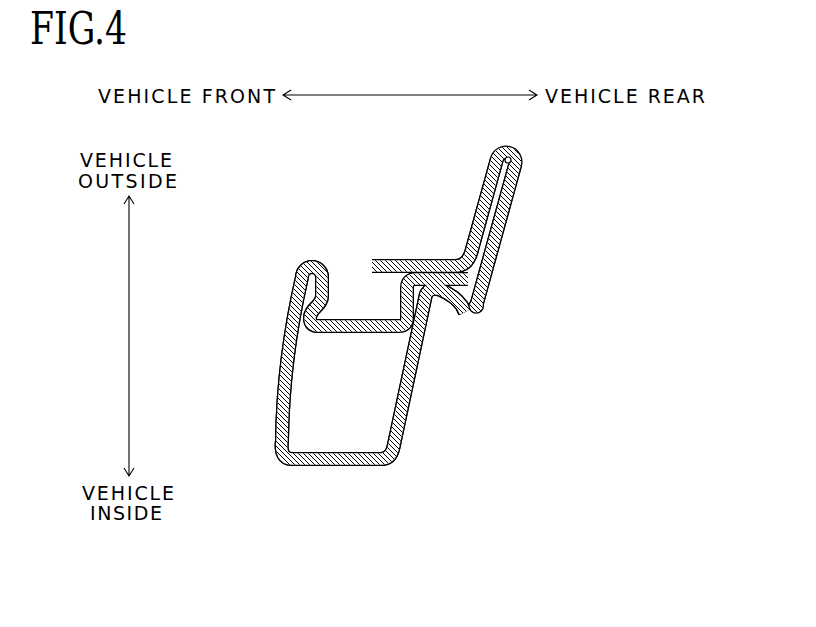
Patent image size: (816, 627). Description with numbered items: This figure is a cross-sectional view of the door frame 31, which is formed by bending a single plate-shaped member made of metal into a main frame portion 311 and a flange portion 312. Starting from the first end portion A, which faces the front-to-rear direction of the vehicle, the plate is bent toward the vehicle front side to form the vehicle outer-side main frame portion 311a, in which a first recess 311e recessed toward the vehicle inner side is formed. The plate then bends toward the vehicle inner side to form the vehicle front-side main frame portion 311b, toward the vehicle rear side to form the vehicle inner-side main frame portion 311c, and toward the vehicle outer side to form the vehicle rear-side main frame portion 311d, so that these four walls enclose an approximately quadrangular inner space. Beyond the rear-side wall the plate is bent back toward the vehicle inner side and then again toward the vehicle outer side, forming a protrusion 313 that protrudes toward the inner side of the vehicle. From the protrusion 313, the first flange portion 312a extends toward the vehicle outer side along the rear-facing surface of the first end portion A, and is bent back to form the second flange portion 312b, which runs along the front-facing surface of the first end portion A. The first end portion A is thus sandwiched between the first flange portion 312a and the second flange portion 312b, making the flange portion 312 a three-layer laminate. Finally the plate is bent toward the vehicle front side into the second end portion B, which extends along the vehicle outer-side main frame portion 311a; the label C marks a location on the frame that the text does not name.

The door frame 31 is at (294, 184).
The main frame portion 311 is at (246, 399).
The vehicle outer-side main frame portion 311a is at (483, 296).
The vehicle front-side main frame portion 311b is at (284, 358).
The vehicle inner-side main frame portion 311c is at (346, 467).
The vehicle rear-side main frame portion 311d is at (419, 392).
The first recess 311e is at (356, 273).
The flange portion 312 is at (549, 158).
The first flange portion 312a is at (508, 236).
The second flange portion 312b is at (482, 192).
The protrusion 313 is at (471, 323).
The first end portion A is at (500, 204).
The second end portion B is at (413, 262).
The gap C is at (328, 287).